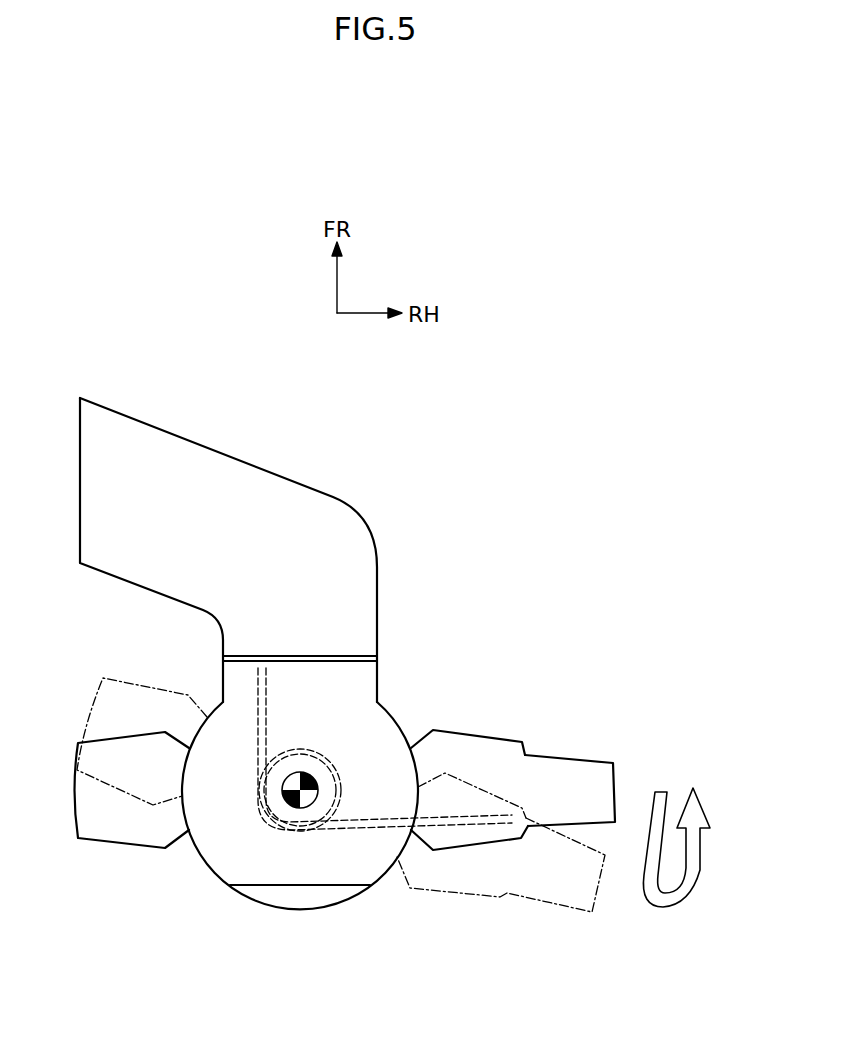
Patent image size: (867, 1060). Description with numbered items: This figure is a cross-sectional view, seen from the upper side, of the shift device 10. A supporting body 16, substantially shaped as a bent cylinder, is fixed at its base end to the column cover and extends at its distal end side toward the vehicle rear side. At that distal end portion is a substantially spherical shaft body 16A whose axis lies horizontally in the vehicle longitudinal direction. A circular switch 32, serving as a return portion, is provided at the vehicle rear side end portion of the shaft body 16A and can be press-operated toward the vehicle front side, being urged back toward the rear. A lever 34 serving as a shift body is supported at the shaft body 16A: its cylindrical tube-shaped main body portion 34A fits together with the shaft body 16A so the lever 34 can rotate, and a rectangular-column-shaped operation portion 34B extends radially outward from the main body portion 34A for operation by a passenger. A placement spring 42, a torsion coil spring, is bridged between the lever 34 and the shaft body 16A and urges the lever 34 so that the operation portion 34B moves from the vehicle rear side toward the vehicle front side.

The shift device 10 is at (475, 465).
The supporting body 16 is at (228, 455).
The shaft body 16A is at (212, 873).
The switch 32 is at (300, 899).
The lever 34 is at (525, 740).
The main body portion 34A is at (115, 677).
The operation portion 34B is at (587, 770).
The placement spring 42 is at (373, 830).